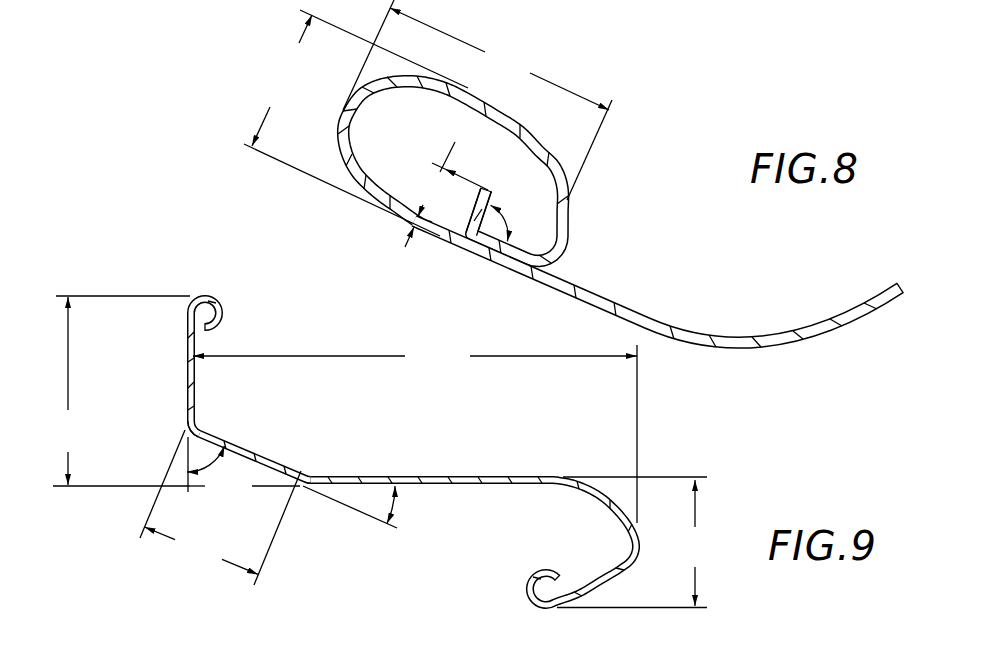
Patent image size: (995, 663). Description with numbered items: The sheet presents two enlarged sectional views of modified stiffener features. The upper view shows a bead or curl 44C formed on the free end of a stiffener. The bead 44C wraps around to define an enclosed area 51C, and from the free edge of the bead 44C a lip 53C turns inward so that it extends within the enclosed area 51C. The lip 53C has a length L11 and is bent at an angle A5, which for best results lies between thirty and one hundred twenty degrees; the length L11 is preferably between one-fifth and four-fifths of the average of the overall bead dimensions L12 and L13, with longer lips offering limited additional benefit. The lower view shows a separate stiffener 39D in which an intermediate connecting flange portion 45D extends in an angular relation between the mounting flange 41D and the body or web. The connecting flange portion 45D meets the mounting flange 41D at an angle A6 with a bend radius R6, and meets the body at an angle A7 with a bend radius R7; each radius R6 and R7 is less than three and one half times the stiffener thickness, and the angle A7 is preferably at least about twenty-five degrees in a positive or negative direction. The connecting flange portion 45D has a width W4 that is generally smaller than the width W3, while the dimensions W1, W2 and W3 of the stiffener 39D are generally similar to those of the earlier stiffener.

In FIG. 8, the enclosed area 51C is at (413, 135).
In FIG. 8, the bead 44C is at (358, 191).
In FIG. 8, the lip 53C is at (489, 187).
In FIG. 8, the length of lip L11 is at (453, 171).
In FIG. 8, the dimension of bead L12 is at (477, 100).
In FIG. 8, the dimension of bead L13 is at (356, 123).
In FIG. 8, the angle A5 is at (492, 200).
In FIG. 9, the mounting flange 41D is at (187, 375).
In FIG. 9, the intermediate connecting flange portion 45D is at (257, 455).
In FIG. 9, the stiffener 39D is at (458, 476).
In FIG. 9, the radius R6 is at (197, 429).
In FIG. 9, the radius R7 is at (307, 472).
In FIG. 9, the angle A6 is at (243, 474).
In FIG. 9, the angle A7 is at (396, 513).
In FIG. 9, the width dimension W1 is at (636, 542).
In FIG. 9, the width dimension W2 is at (119, 391).
In FIG. 9, the width dimension W3 is at (415, 432).
In FIG. 9, the width of connecting flange portion W4 is at (220, 507).